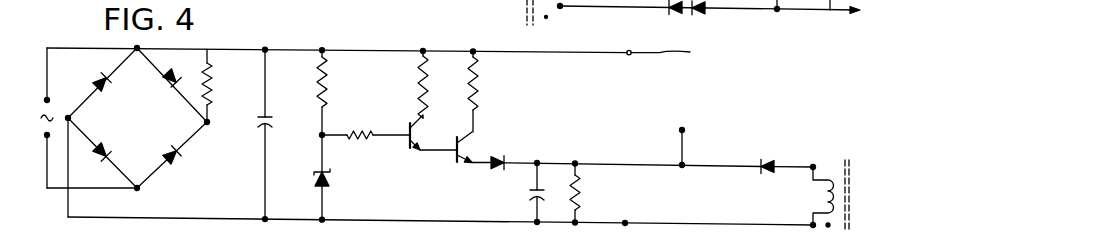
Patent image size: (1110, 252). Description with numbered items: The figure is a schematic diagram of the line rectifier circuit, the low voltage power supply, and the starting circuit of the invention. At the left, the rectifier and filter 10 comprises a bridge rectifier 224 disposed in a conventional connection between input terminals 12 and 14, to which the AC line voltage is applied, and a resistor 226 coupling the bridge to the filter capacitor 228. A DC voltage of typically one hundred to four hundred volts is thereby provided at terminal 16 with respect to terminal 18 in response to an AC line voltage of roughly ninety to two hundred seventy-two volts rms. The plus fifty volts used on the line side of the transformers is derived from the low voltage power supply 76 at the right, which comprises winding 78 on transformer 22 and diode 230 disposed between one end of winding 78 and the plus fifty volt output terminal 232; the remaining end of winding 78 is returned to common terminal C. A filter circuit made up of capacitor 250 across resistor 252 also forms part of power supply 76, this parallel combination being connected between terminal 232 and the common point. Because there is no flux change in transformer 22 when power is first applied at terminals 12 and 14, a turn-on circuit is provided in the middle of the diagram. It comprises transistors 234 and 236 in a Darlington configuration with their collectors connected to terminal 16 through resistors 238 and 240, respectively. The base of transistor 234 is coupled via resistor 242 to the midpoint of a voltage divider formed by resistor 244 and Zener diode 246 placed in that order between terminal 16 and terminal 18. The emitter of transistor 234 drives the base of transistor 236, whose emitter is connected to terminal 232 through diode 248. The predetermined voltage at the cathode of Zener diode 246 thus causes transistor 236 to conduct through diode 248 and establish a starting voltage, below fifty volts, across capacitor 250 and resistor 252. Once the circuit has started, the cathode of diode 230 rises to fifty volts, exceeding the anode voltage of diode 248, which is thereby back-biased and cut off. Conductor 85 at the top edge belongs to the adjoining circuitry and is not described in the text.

The input terminal 12 is at (47, 100).
The input terminal 14 is at (47, 135).
The bridge rectifier 224 is at (158, 121).
The rectifier and filter 10 is at (225, 183).
The resistor 226 is at (209, 94).
The filter capacitor 228 is at (272, 128).
The resistor 244 is at (313, 92).
The Zener diode 246 is at (330, 171).
The resistor 242 is at (376, 121).
The resistor 238 is at (421, 105).
The transistor 234 is at (402, 143).
The resistor 240 is at (480, 93).
The transistor 236 is at (453, 155).
The diode 248 is at (503, 158).
The capacitor 250 is at (529, 197).
The resistor 252 is at (579, 206).
The +50 volt output terminal 232 is at (680, 131).
The terminal 18 is at (628, 222).
The terminal 16 is at (690, 61).
The diode 230 is at (772, 163).
The low voltage power supply 76 is at (728, 213).
The winding 78 is at (827, 178).
The transformer 22 is at (850, 170).
The conductor 85 is at (560, 7).